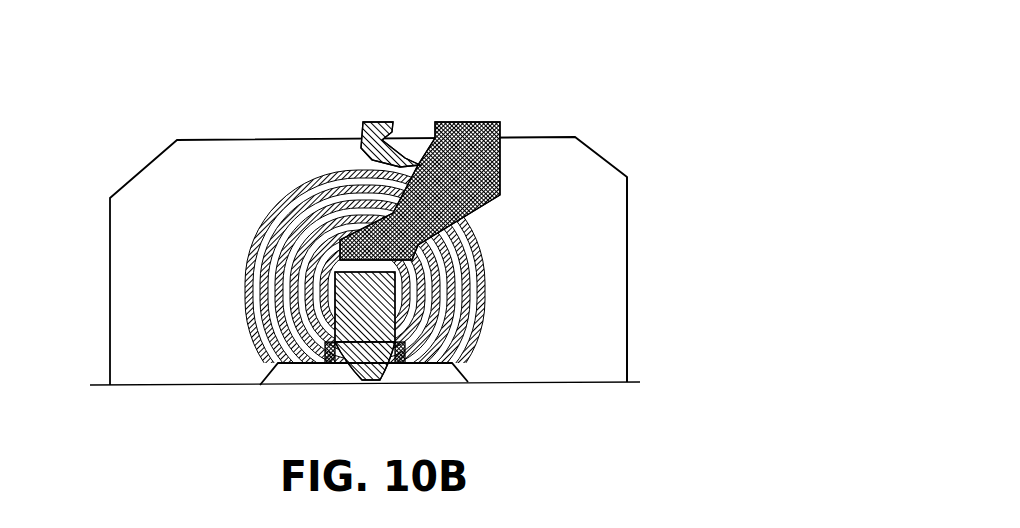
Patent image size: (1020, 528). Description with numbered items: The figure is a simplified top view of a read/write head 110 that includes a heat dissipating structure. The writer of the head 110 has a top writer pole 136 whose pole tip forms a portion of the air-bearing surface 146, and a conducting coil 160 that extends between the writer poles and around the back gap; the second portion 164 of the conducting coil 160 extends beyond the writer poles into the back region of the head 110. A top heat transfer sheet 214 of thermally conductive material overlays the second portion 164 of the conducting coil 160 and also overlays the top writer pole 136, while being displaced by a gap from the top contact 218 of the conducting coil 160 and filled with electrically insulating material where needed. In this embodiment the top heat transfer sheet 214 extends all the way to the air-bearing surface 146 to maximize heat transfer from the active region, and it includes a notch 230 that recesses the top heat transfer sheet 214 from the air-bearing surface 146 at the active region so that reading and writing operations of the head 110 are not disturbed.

The read/write head 110 is at (577, 73).
The top writer pole 136 is at (378, 350).
The air-bearing surface 146 is at (200, 387).
The conducting coil 160 is at (358, 251).
The second portion of conducting coil 164 is at (262, 171).
The top heat transfer sheet 214 is at (602, 287).
The top contact of conducting coil 218 is at (467, 120).
The notch 230 is at (292, 389).